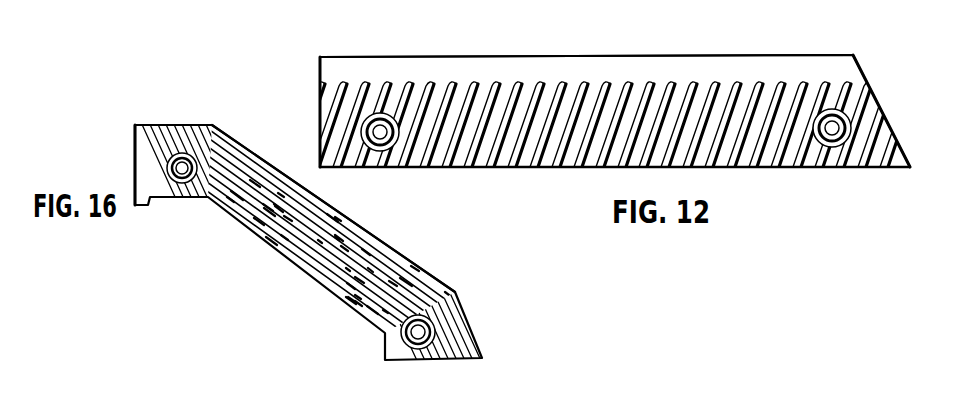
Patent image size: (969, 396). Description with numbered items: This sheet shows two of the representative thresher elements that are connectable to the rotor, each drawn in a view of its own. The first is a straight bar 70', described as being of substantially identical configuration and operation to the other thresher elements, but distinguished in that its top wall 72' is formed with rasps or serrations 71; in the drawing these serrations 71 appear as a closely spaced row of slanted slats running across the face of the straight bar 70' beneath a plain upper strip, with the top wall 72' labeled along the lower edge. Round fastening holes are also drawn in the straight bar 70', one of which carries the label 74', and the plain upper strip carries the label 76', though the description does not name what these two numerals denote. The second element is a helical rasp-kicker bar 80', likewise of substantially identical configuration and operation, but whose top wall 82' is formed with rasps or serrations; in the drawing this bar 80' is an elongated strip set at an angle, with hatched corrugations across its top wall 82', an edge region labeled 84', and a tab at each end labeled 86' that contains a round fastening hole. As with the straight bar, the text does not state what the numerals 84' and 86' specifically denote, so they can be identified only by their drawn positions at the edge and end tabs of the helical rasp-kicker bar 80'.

In FIG. 12, the straight bar 70' is at (602, 126).
In FIG. 12, the rasps or serrations 71 is at (543, 168).
In FIG. 12, the top wall 72' is at (615, 194).
In FIG. 12, the mounting hole 74' is at (386, 89).
In FIG. 12, the top flange strip 76' is at (586, 49).
In FIG. 16, the helical rasp-kicker bar 80' is at (314, 241).
In FIG. 16, the top wall 82' is at (322, 241).
In FIG. 16, the upper edge flange 84' is at (348, 208).
In FIG. 16, the mounting tabs 86' is at (314, 250).